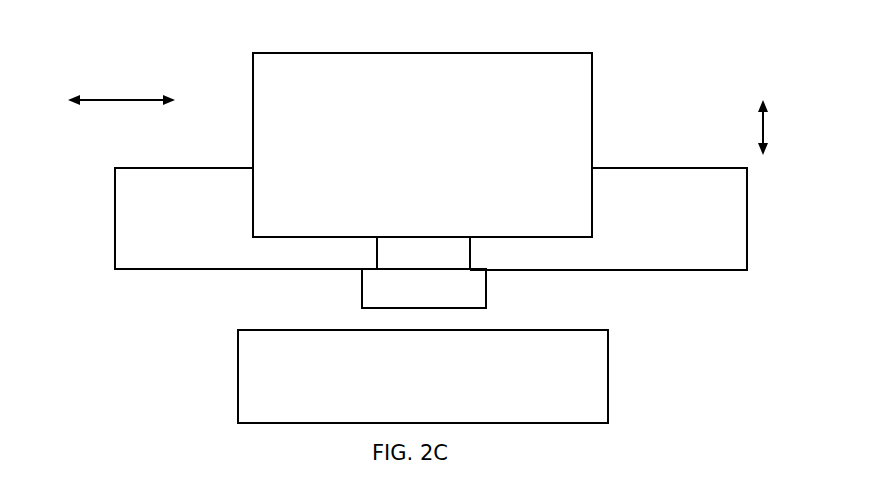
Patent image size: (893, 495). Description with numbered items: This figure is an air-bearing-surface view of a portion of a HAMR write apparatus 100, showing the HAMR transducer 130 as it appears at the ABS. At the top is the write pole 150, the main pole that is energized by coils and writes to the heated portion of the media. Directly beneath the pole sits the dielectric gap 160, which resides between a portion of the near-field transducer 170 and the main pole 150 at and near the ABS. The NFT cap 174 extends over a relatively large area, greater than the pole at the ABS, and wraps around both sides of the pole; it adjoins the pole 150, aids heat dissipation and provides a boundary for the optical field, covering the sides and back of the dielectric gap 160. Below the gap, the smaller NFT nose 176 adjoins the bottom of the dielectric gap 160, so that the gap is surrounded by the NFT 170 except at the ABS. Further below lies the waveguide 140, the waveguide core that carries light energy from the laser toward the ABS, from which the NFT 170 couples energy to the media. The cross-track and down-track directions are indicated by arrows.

The HAMR write apparatus 100 is at (467, 34).
The HAMR transducer 130 is at (418, 238).
The write pole 150 is at (422, 145).
The NFT cap 174 is at (431, 219).
The dielectric gap 160 is at (423, 253).
The NFT nose 176 is at (424, 288).
The near-field transducer 170 is at (580, 289).
The waveguide 140 is at (423, 376).